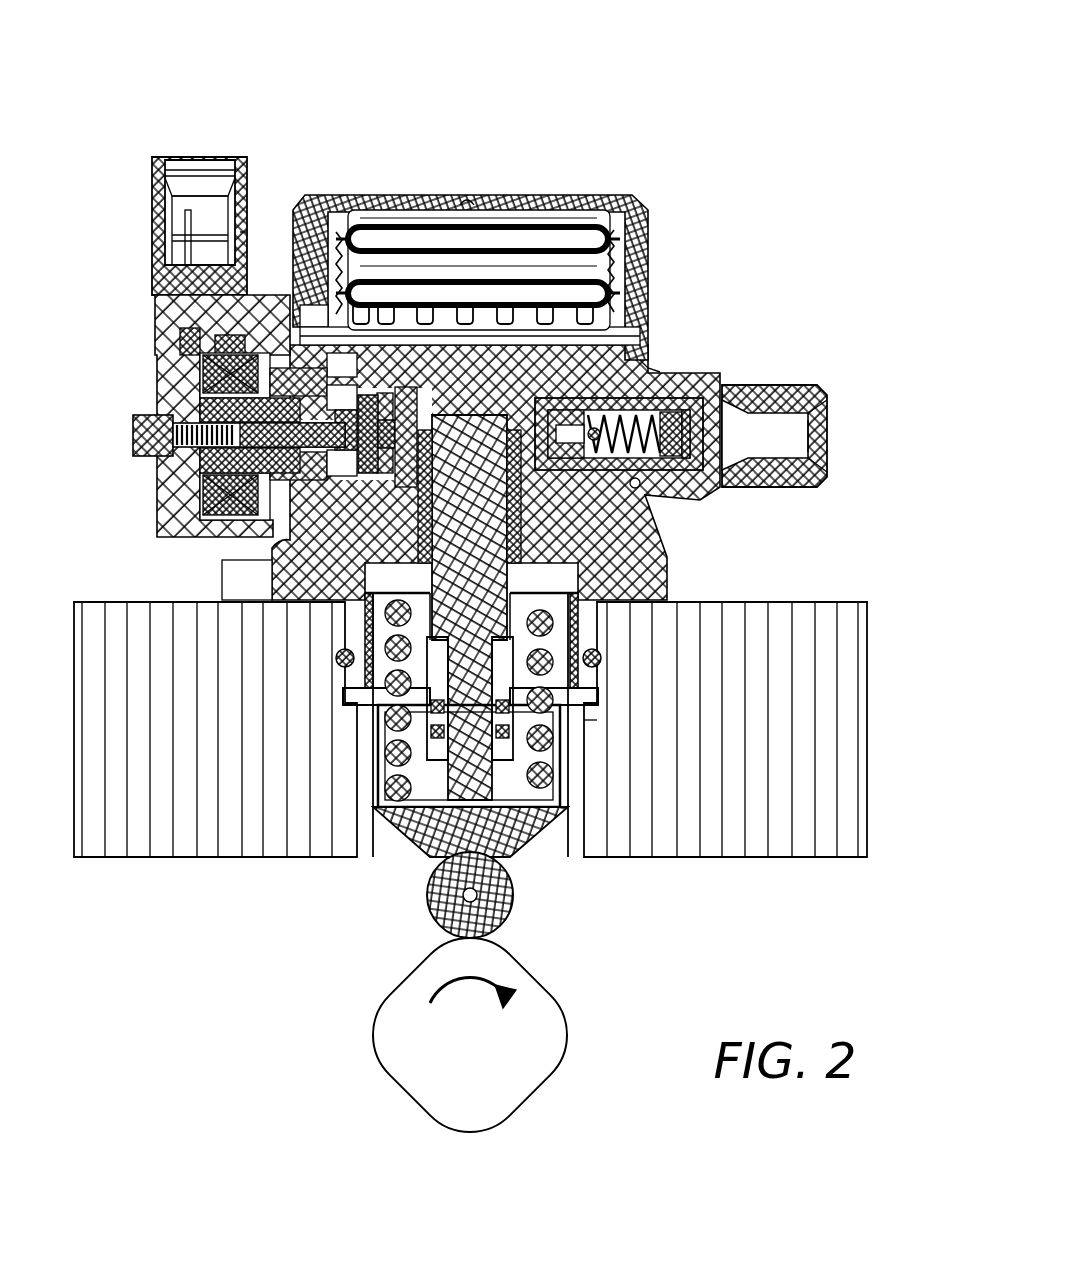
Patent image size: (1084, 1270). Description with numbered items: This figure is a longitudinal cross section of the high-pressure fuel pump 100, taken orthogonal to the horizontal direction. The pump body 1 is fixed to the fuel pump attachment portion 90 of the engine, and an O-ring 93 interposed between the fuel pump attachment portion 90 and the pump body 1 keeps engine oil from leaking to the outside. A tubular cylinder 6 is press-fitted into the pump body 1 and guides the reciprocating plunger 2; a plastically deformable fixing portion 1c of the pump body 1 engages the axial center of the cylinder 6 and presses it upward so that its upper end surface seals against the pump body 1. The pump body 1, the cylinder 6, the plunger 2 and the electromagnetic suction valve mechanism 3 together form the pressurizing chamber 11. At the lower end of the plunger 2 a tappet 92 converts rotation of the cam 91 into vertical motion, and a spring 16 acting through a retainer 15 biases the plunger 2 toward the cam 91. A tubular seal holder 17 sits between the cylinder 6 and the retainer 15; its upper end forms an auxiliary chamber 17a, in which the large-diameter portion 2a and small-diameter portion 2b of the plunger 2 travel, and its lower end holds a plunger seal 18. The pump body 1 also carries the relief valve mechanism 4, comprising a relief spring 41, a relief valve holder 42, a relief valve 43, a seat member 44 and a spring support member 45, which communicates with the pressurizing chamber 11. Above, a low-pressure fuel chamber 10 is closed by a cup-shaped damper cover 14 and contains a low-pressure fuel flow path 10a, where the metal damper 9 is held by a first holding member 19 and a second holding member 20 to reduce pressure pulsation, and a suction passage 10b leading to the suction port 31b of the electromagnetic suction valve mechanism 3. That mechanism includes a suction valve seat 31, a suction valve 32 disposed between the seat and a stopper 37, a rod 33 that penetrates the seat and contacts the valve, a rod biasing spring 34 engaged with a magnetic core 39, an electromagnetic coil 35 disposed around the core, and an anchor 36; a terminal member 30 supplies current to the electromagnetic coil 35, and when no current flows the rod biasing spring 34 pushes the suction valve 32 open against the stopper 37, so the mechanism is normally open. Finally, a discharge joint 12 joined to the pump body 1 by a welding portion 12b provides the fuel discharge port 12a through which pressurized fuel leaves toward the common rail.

The high-pressure fuel pump 100 is at (764, 64).
The pump body 1 is at (640, 346).
The fixing portion 1c is at (262, 580).
The plunger 2 is at (850, 878).
The large-diameter portion 2a is at (602, 655).
The small-diameter portion 2b is at (584, 723).
The electromagnetic suction valve mechanism 3 is at (138, 520).
The relief valve mechanism 4 is at (930, 575).
The cylinder 6 is at (512, 520).
The metal damper 9 is at (493, 226).
The low-pressure fuel chamber 10 is at (528, 268).
The low-pressure fuel flow path 10a is at (598, 292).
The suction passage 10b is at (305, 235).
The pressurizing chamber 11 is at (468, 412).
The discharge joint 12 is at (780, 387).
The fuel discharge port 12a is at (815, 428).
The welding portion 12b is at (647, 365).
The damper cover 14 is at (620, 197).
The retainer 15 is at (530, 792).
The spring 16 is at (372, 692).
The seal holder 17 is at (386, 706).
The auxiliary chamber 17a is at (420, 842).
The plunger seal 18 is at (565, 760).
The first holding member 19 is at (632, 262).
The second holding member 20 is at (625, 312).
The terminal member 30 is at (192, 165).
The suction valve seat 31 is at (290, 512).
The suction port 31b is at (293, 357).
The suction valve 32 is at (338, 330).
The rod 33 is at (303, 388).
The rod biasing spring 34 is at (132, 428).
The electromagnetic coil 35 is at (160, 493).
The anchor 36 is at (160, 463).
The stopper 37 is at (372, 396).
The magnetic core 39 is at (137, 414).
The relief spring 41 is at (575, 468).
The relief valve holder 42 is at (630, 466).
The relief valve 43 is at (690, 468).
The seat member 44 is at (745, 480).
The spring support member 45 is at (640, 493).
The fuel pump attachment portion 90 is at (113, 820).
The cam 91 is at (558, 1015).
The tappet 92 is at (442, 862).
The O-ring 93 is at (337, 665).